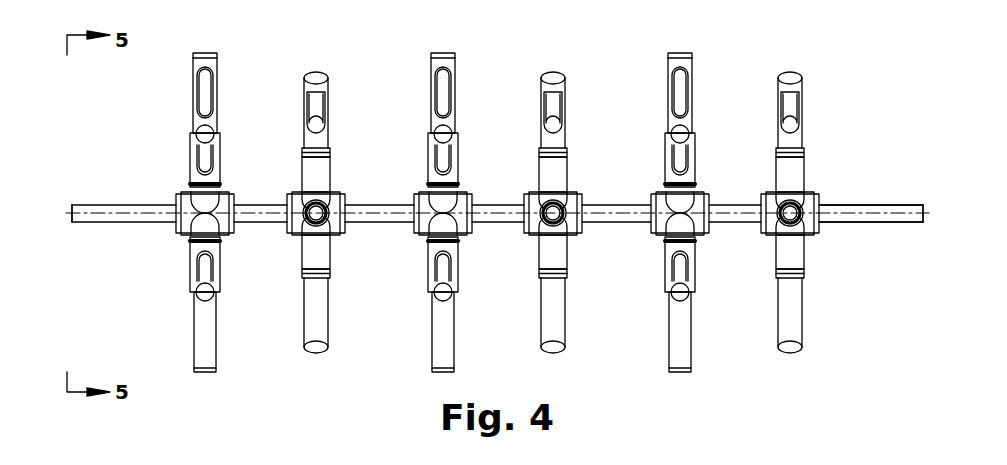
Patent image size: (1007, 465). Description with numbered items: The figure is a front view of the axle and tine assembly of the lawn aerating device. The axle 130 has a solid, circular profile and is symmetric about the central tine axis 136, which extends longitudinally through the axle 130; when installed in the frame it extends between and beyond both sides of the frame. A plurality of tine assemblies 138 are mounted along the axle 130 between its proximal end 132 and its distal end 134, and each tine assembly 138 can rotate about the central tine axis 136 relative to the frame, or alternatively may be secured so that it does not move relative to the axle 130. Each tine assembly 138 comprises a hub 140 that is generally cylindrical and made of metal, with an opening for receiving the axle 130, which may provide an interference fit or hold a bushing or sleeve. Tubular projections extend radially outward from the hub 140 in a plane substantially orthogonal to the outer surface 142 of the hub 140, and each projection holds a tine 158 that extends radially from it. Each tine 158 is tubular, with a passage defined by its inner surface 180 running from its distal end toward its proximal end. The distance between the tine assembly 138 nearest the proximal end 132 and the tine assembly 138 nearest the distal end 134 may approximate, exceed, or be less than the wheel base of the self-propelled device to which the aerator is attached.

The axle 130 is at (132, 204).
The proximal end 132 is at (77, 246).
The distal end 134 is at (918, 243).
The central tine axis 136 is at (882, 204).
The tine assembly 138 is at (227, 199).
The hub 140 is at (228, 191).
The outer surface 142 is at (336, 194).
The tine 158 is at (216, 332).
The inner surface 180 is at (190, 165).